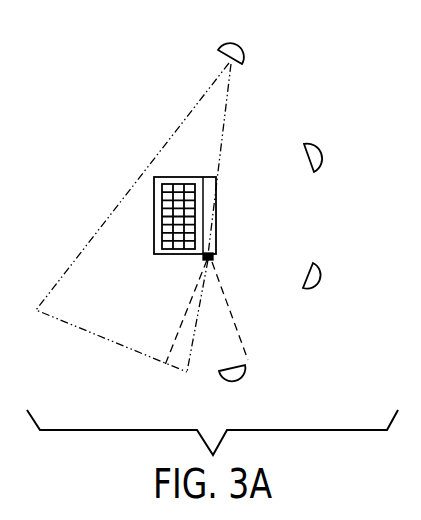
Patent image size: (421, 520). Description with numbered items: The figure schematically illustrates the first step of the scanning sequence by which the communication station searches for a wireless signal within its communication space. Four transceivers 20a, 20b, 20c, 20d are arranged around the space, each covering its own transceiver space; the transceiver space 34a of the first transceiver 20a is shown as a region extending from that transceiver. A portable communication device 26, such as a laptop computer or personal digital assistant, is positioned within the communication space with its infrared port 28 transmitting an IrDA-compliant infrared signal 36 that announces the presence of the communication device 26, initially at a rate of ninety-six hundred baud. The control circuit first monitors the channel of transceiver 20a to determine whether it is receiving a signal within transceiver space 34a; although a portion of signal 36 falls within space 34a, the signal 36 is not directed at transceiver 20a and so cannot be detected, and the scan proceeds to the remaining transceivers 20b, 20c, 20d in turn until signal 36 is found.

The transceiver 20a is at (236, 47).
The transceiver 20b is at (310, 146).
The transceiver 20c is at (316, 266).
The transceiver 20d is at (249, 369).
The communication device 26 is at (153, 188).
The infrared port 28 is at (214, 259).
The transceiver space 34a is at (190, 113).
The infrared signal 36 is at (176, 343).